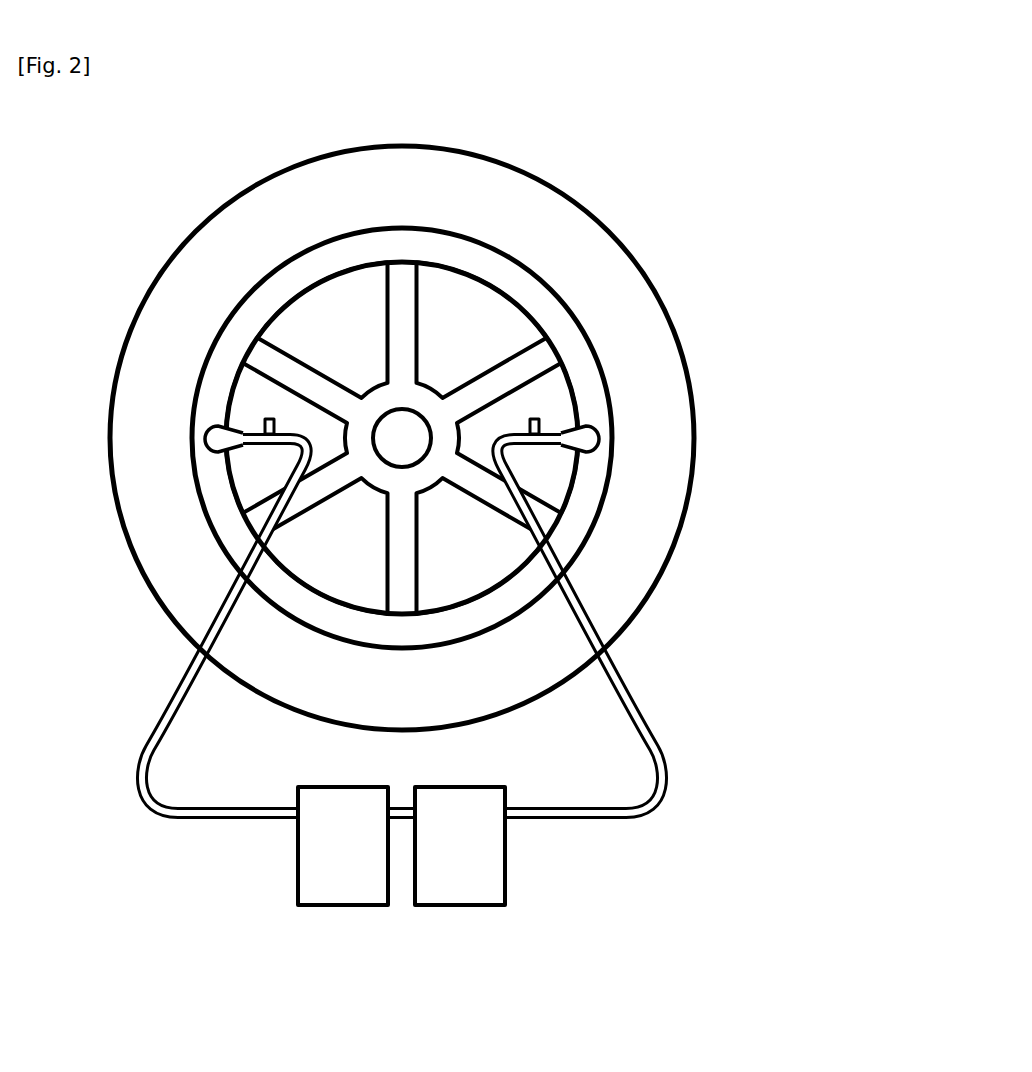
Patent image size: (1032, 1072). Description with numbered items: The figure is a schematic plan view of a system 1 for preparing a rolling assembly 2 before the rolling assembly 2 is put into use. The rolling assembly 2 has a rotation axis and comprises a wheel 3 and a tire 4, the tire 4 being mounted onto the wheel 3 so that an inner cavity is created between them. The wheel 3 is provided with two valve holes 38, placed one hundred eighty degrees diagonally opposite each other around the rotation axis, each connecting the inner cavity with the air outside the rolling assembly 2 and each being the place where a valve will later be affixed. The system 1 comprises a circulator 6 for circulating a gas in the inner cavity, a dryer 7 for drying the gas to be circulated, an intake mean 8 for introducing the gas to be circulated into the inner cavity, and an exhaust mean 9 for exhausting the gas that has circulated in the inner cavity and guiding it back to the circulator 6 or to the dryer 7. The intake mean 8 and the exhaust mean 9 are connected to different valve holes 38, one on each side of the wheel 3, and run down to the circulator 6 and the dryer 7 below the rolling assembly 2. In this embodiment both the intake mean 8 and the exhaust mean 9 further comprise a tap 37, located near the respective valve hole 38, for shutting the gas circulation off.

The system 1 is at (488, 557).
The rolling assembly 2 is at (427, 451).
The wheel 3 is at (542, 312).
The tire 4 is at (537, 232).
The circulator 6 is at (467, 880).
The dryer 7 is at (350, 870).
The intake mean 8 is at (187, 673).
The exhaust mean 9 is at (638, 715).
The tap 37 is at (260, 431).
The valve hole 38 is at (207, 452).